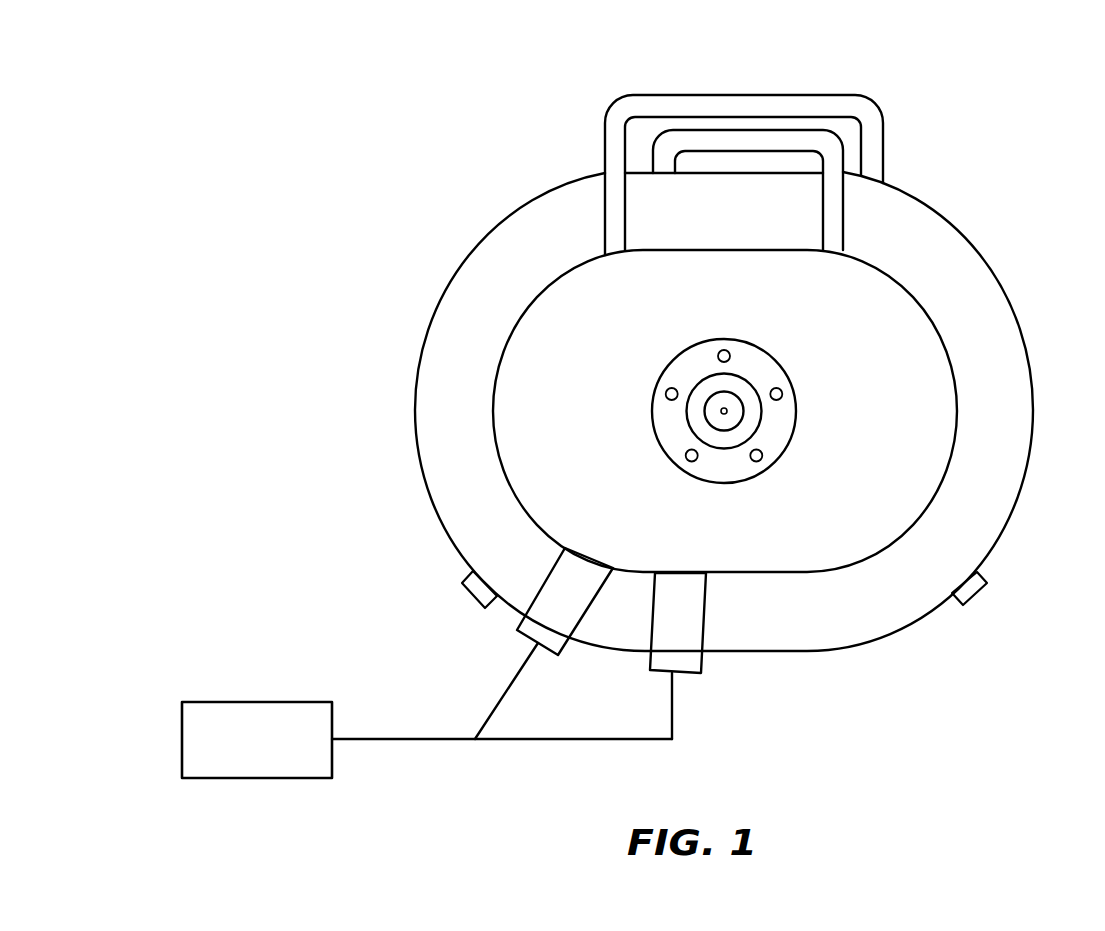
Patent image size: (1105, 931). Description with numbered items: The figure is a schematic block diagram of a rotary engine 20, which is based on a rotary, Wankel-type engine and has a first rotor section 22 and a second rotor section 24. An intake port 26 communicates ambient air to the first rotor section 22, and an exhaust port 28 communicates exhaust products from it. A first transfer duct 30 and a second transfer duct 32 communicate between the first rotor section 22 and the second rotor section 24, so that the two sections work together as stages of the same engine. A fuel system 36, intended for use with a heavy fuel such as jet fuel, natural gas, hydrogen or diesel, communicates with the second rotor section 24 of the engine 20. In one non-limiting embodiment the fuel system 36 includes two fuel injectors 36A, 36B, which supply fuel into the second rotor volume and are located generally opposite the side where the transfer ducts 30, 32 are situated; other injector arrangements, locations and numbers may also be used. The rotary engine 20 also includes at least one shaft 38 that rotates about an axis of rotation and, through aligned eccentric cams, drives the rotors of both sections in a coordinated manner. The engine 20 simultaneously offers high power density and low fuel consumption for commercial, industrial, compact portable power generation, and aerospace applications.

The rotary engine 20 is at (715, 338).
The first rotor section 22 is at (1006, 288).
The second rotor section 24 is at (962, 410).
The intake port 26 is at (478, 594).
The exhaust port 28 is at (967, 588).
The first transfer duct 30 is at (718, 102).
The second transfer duct 32 is at (790, 133).
The fuel system 36 is at (250, 702).
The fuel injector 36A is at (557, 630).
The fuel injector 36B is at (687, 662).
The shaft 38 is at (743, 412).